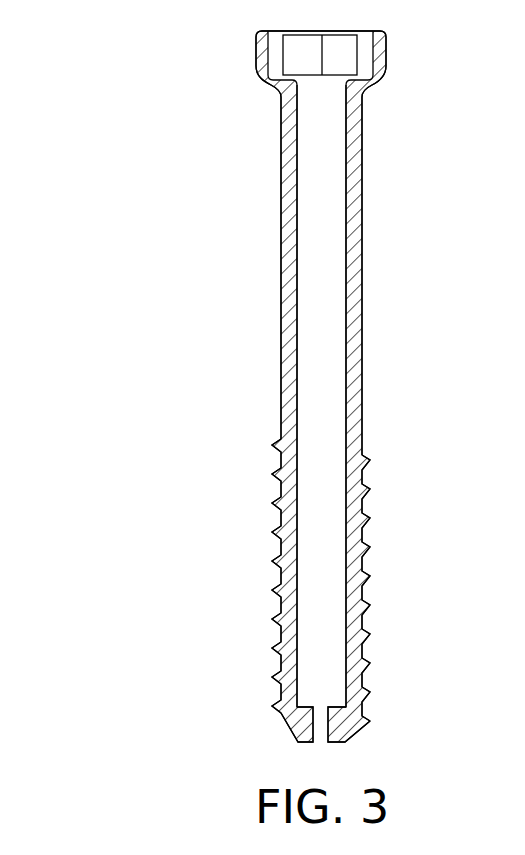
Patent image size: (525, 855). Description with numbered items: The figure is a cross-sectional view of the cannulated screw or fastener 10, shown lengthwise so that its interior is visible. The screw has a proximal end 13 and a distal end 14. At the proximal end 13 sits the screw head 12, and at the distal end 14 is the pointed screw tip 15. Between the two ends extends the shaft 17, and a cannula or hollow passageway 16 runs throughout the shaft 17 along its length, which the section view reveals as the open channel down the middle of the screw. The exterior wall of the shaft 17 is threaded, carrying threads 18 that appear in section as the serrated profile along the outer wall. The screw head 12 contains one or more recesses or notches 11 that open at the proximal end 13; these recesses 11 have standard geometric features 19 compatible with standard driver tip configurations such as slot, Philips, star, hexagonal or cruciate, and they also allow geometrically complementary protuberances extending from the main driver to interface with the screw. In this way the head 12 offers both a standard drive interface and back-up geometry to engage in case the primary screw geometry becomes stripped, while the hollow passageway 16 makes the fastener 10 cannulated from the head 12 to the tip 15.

The cannulated screw 10 is at (436, 211).
The recess 11 is at (365, 55).
The screw head 12 is at (268, 87).
The proximal end 13 is at (256, 42).
The distal end 14 is at (292, 717).
The pointed screw tip 15 is at (353, 735).
The cannula 16 is at (323, 333).
The shaft 17 is at (281, 292).
The threads 18 is at (365, 548).
The standard geometric features 19 is at (338, 65).